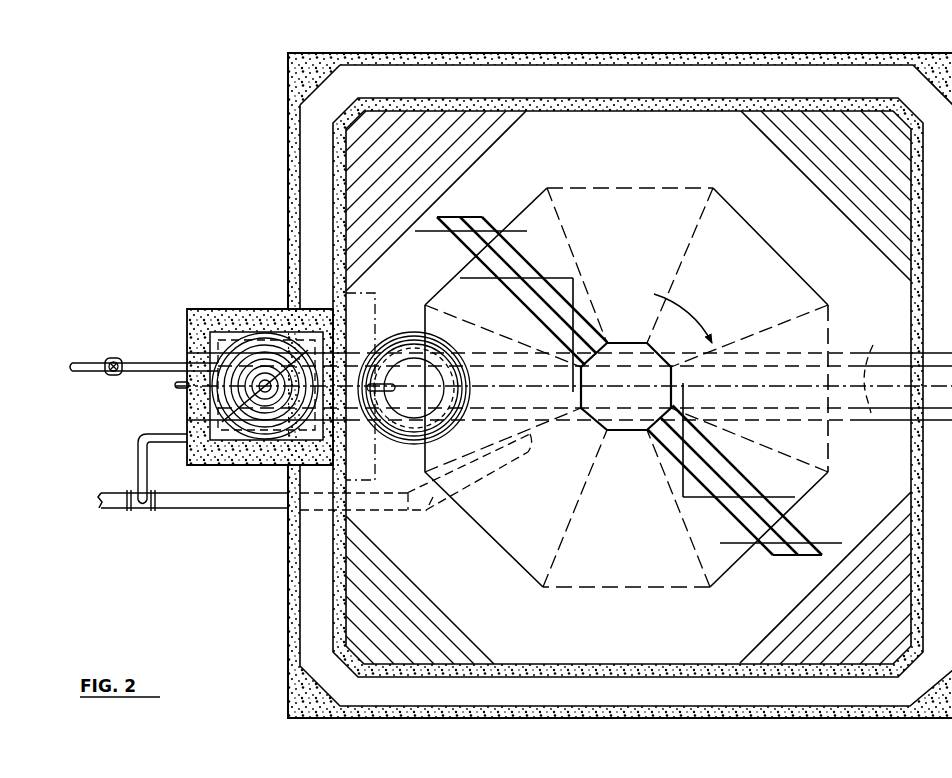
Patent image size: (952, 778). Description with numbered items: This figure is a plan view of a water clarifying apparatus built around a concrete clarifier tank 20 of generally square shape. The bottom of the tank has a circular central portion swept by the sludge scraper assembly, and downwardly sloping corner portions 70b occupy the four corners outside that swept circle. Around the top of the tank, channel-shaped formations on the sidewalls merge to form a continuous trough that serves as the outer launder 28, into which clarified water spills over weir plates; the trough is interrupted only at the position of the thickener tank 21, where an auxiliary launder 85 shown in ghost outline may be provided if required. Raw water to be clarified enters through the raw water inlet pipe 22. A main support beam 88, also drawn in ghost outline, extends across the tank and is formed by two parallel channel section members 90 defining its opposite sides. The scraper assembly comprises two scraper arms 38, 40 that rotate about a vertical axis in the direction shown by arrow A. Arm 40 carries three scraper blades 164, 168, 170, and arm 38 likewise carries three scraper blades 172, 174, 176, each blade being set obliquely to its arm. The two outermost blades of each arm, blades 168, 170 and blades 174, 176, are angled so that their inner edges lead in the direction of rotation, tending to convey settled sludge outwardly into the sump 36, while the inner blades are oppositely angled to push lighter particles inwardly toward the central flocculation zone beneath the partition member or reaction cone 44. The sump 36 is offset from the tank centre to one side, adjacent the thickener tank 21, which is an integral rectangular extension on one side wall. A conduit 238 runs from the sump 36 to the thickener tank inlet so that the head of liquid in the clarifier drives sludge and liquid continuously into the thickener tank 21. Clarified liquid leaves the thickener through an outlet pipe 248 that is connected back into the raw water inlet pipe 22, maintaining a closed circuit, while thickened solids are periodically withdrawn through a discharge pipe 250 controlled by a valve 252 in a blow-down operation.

The clarifier tank 20 is at (801, 54).
The outer launder 28 is at (848, 87).
The thickener tank 21 is at (222, 306).
The raw water inlet pipe 22 is at (260, 506).
The sump 36 is at (412, 441).
The scraper arm 38 is at (516, 248).
The scraper arm 40 is at (729, 462).
The partition member (reaction cone) 44 is at (754, 258).
The corner portions 70b is at (481, 152).
The auxiliary launder 85 is at (365, 293).
The main support beam 88 is at (840, 357).
The channel section members 90 is at (873, 347).
The scraper blade 164 is at (683, 483).
The scraper blade 168 is at (692, 498).
The scraper blade 170 is at (720, 543).
The scraper blade 172 is at (574, 298).
The scraper blade 174 is at (560, 278).
The scraper blade 176 is at (527, 231).
The conduit 238 is at (193, 392).
The outlet pipe 248 is at (138, 462).
The discharge pipe 250 is at (168, 362).
The valve 252 is at (117, 373).
The arrow A is at (683, 315).